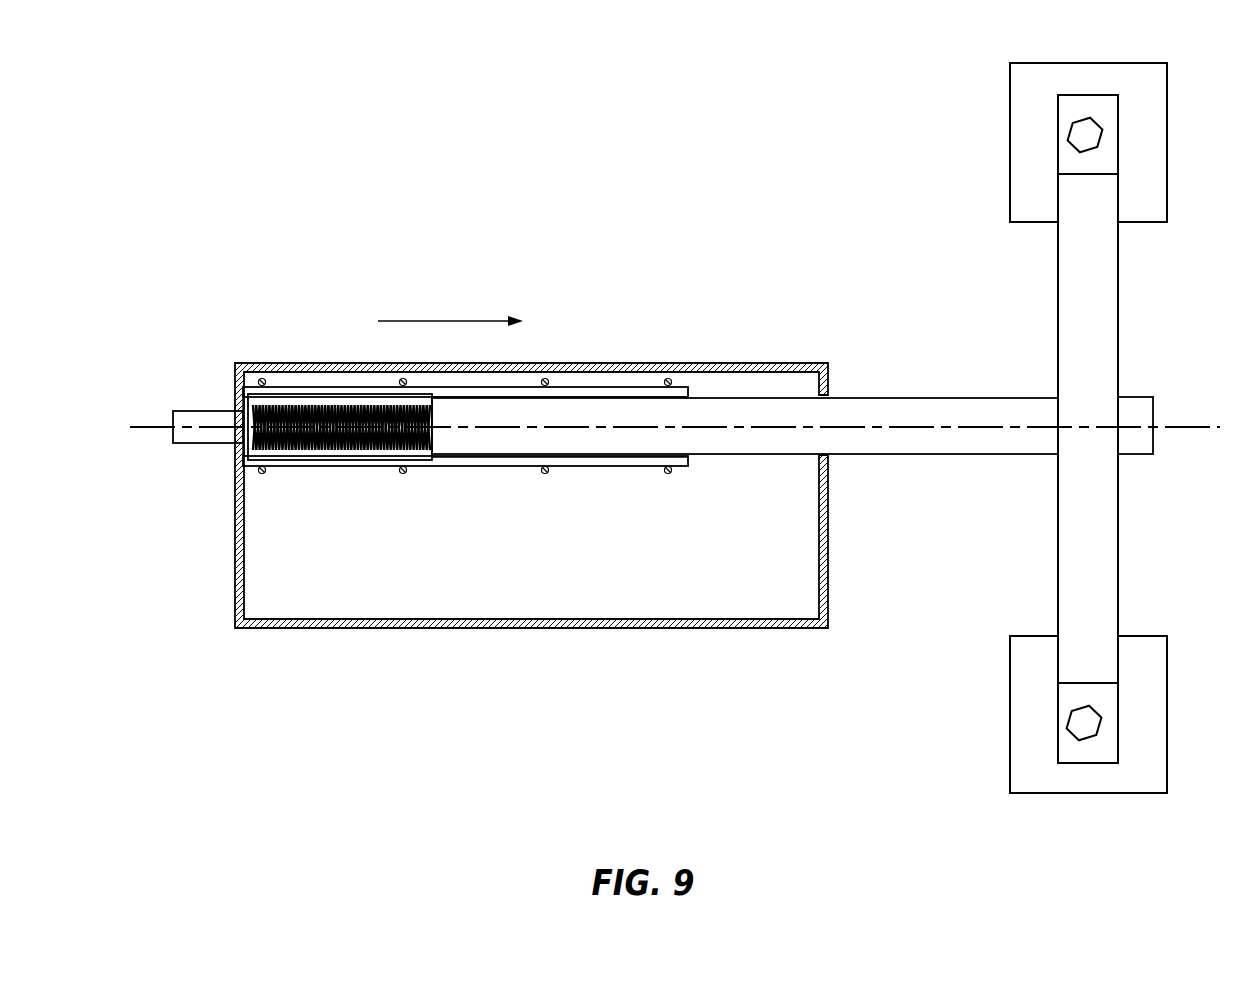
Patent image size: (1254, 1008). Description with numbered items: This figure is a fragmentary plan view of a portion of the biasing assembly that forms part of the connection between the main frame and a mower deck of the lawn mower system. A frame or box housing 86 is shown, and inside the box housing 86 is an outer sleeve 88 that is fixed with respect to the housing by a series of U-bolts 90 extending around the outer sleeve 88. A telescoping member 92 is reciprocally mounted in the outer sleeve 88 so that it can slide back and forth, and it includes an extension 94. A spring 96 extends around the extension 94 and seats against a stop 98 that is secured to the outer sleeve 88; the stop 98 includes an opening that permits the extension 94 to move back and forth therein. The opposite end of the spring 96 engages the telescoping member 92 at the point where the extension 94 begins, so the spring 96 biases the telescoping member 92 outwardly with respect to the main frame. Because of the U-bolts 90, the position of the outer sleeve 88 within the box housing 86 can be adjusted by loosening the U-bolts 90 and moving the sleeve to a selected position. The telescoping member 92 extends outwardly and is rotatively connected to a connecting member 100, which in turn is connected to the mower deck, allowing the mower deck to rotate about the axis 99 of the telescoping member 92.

The box housing 86 is at (293, 628).
The outer sleeve 88 is at (590, 397).
The U-bolts 90 is at (403, 472).
The telescoping member 92 is at (848, 445).
The extension 94 is at (202, 435).
The spring 96 is at (325, 412).
The stop 98 is at (240, 393).
The axis of rotation 99 is at (153, 428).
The connecting member 100 is at (1078, 277).